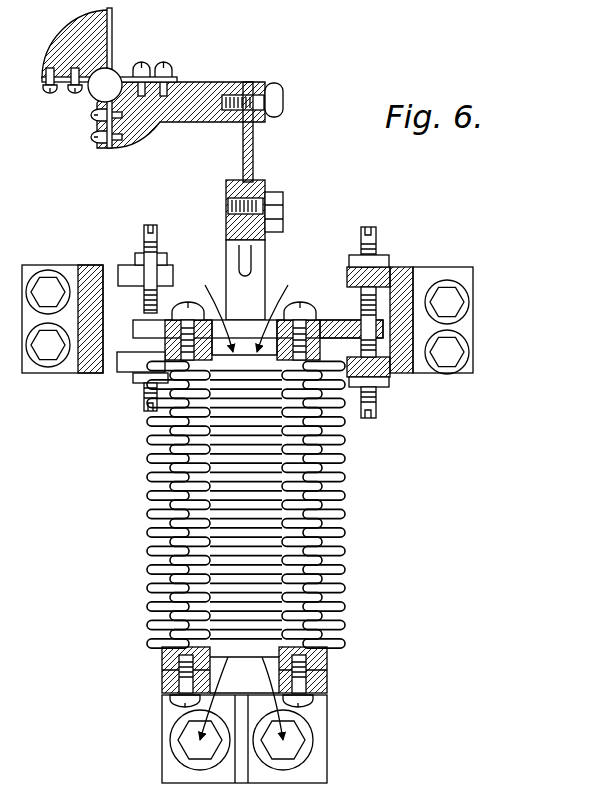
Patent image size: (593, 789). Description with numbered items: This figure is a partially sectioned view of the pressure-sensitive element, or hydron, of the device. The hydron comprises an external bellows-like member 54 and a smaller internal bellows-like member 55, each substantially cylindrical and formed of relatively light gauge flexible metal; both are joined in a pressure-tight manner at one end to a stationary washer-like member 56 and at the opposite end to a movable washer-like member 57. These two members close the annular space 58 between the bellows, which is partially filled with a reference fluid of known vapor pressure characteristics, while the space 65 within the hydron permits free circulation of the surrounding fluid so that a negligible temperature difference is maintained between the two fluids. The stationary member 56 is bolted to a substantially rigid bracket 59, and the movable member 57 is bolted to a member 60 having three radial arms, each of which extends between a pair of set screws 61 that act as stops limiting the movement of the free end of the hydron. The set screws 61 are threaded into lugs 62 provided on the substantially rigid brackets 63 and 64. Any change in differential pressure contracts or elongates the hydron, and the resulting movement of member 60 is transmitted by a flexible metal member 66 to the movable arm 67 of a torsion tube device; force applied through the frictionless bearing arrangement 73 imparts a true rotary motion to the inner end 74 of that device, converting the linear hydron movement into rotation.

The external bellows-like member 54 is at (340, 558).
The internal bellows-like member 55 is at (210, 564).
The stationary washer-like member 56 is at (162, 666).
The movable washer-like member 57 is at (246, 318).
The annular space 58 is at (315, 479).
The substantially rigid bracket 59 is at (330, 716).
The member with three radial arms 60 is at (350, 322).
The set screws 61 is at (158, 233).
The lugs 62 is at (173, 279).
The substantially rigid bracket 63 is at (75, 378).
The substantially rigid bracket 64 is at (427, 378).
The space within the hydron 65 is at (198, 468).
The flexible metal member 66 is at (253, 152).
The movable arm 67 is at (212, 83).
The frictionless bearing arrangement 73 is at (80, 118).
The inner end of the torsion tube device 74 is at (112, 76).